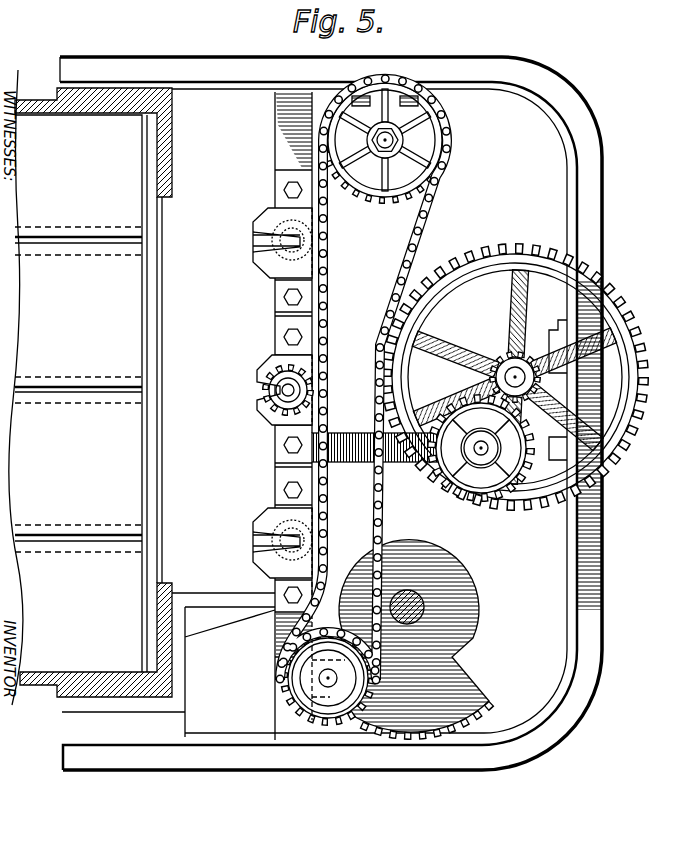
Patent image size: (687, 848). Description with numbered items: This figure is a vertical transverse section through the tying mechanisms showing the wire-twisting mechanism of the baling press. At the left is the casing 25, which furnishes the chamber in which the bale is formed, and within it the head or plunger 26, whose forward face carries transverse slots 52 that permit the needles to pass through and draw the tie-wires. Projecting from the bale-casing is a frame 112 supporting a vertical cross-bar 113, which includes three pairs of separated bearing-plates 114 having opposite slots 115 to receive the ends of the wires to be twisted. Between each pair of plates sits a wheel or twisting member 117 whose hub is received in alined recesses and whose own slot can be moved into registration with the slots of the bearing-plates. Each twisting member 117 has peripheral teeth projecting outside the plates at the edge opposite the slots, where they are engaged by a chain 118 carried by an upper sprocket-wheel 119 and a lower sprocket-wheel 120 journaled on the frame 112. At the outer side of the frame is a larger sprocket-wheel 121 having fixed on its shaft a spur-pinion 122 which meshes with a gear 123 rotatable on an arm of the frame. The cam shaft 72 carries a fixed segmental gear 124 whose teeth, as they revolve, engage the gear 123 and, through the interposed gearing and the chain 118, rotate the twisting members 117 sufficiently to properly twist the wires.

The casing 25 is at (36, 108).
The plunger 26 is at (145, 426).
The transverse slots 52 is at (59, 386).
The cam shaft 72 is at (425, 606).
The frame 112 is at (600, 208).
The vertical cross-bar 113 is at (275, 157).
The bearing-plates 114 is at (272, 282).
The slots 115 is at (284, 390).
The twisting members 117 is at (282, 247).
The chain 118 is at (418, 239).
The upper sprocket-wheel 119 is at (450, 152).
The lower sprocket-wheel 120 is at (298, 680).
The larger sprocket-wheel 121 is at (633, 352).
The spur-pinion 122 is at (509, 358).
The gear 123 is at (489, 492).
The segmental gear 124 is at (452, 674).